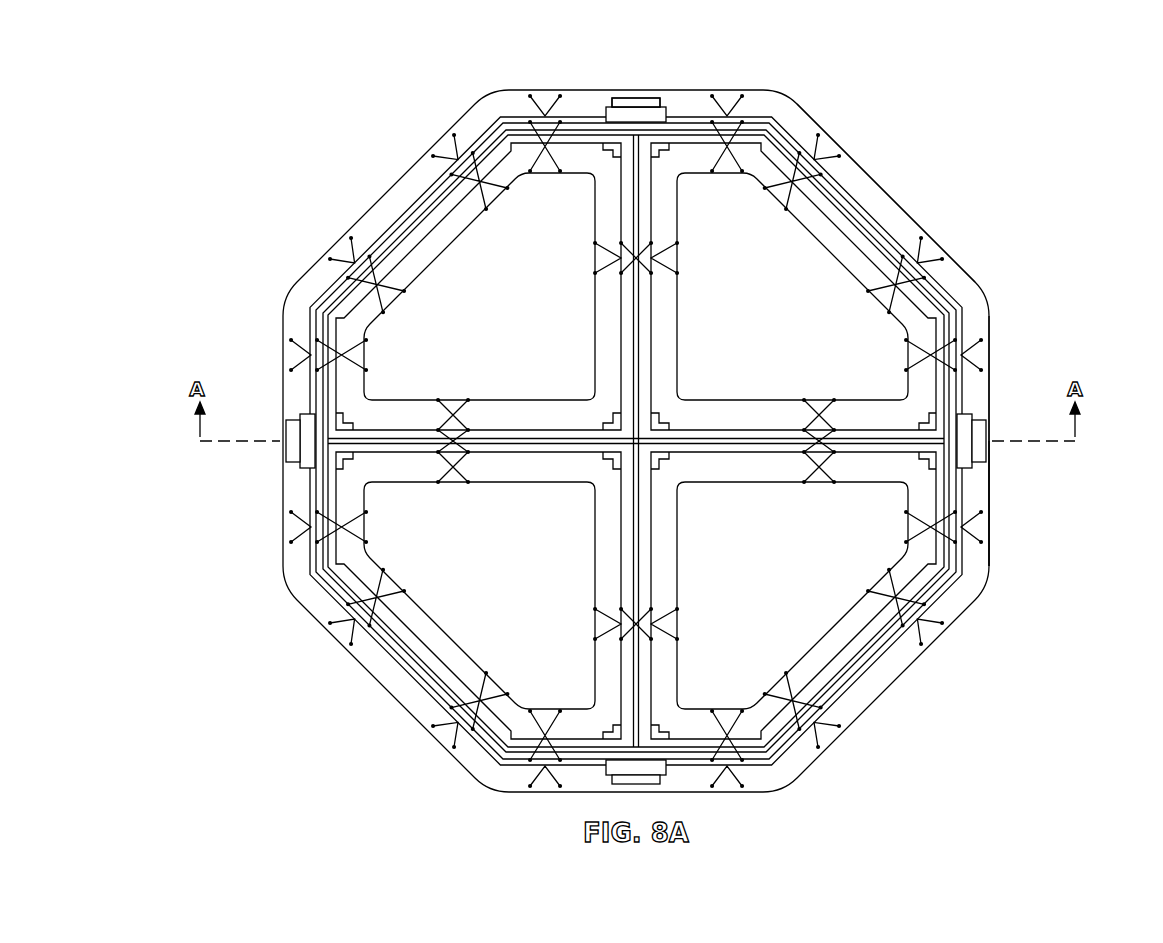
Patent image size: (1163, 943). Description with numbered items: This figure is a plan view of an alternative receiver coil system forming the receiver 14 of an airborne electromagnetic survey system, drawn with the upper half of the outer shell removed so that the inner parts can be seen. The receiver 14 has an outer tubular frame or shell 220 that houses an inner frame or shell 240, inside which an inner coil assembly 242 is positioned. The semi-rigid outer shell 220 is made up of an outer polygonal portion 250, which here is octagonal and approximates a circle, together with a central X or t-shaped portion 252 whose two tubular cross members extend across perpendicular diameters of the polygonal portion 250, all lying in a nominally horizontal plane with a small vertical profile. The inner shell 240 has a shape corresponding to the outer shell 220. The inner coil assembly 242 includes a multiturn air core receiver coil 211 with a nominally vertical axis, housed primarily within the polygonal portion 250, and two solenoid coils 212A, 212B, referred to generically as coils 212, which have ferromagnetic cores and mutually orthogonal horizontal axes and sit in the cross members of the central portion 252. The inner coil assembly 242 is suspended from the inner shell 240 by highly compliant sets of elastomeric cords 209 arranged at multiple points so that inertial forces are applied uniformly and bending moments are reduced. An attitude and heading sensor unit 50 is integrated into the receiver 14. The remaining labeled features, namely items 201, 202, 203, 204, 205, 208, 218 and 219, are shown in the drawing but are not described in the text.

The receiver 14 is at (293, 172).
The attitude and heading sensor unit 50 is at (622, 93).
The tab member 201 is at (657, 100).
The first ring 202 is at (735, 112).
The second ring 203 is at (795, 128).
The elastomeric cords 209 is at (918, 252).
The air core receiver coil 211 is at (866, 208).
The outer tubular shell 220 is at (990, 327).
The tie member 219 is at (972, 350).
The side tab 208 is at (976, 432).
The frame edge 218 is at (990, 458).
The quadrant frame 204 is at (660, 205).
The inner shell 240 is at (650, 235).
The solenoid coils 212 is at (648, 328).
The corner bracket 205 is at (658, 410).
The inner coil assembly 242 is at (550, 441).
The solenoid coil 212A is at (505, 443).
The solenoid coil 212B is at (651, 528).
The central X or t-shaped portion 252 is at (712, 485).
The outer polygonal portion 250 is at (340, 287).